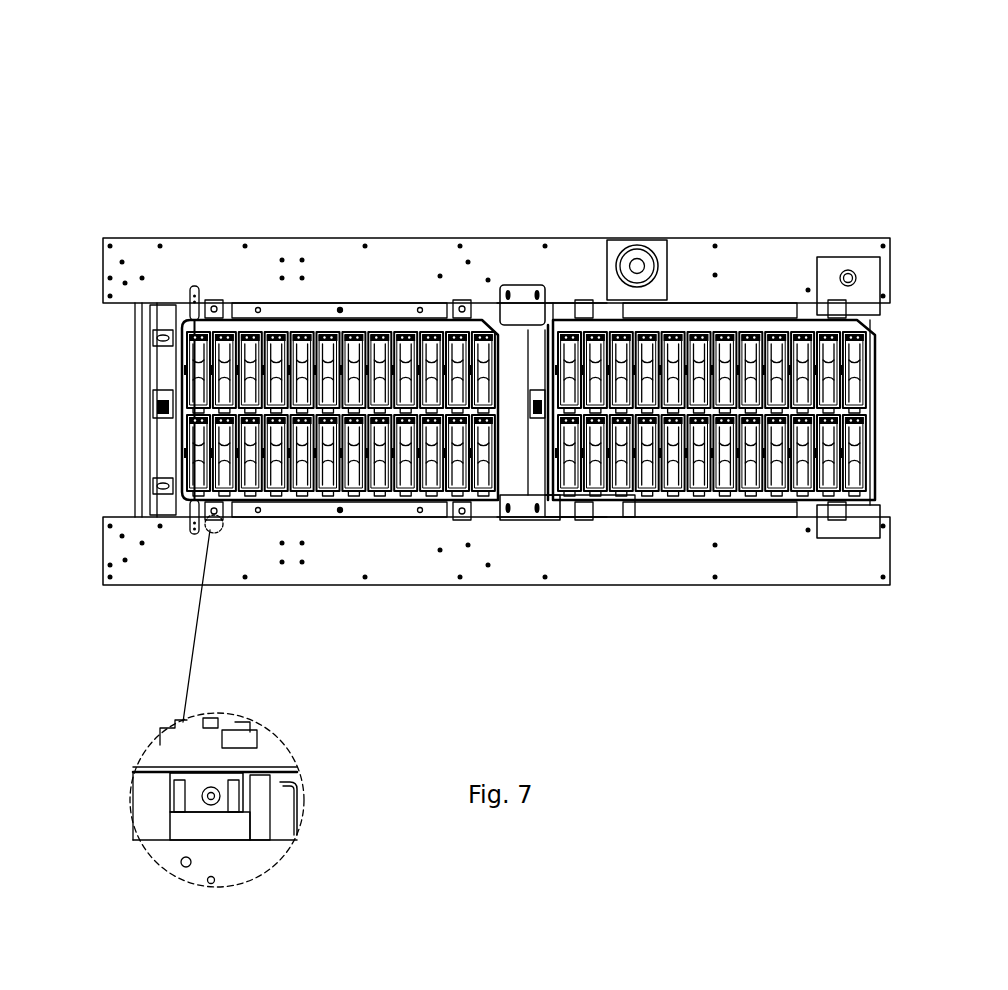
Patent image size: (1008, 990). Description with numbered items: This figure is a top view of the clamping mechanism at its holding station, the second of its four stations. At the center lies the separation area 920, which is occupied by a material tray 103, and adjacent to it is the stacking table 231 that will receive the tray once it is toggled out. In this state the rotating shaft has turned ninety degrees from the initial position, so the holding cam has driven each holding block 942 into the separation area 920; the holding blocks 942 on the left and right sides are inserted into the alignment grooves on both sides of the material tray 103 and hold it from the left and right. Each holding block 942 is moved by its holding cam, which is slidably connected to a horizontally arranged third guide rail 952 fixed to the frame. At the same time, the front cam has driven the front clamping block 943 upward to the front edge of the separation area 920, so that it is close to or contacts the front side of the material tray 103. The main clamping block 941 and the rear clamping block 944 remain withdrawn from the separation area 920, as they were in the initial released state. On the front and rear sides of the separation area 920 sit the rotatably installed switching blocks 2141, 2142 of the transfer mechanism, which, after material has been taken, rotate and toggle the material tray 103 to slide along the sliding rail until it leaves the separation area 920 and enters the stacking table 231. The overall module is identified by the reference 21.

The battery transfer module 21 is at (130, 46).
The material tray 103 is at (177, 758).
The stacking table 231 is at (720, 385).
The separation area 920 is at (360, 368).
The main clamping block 941 is at (370, 316).
The holding block 942 is at (213, 315).
The front clamping block 943 is at (507, 340).
The rear clamping block 944 is at (167, 340).
The third guide rail 952 is at (197, 827).
The switching block 2141 is at (158, 407).
The switching block 2142 is at (567, 340).